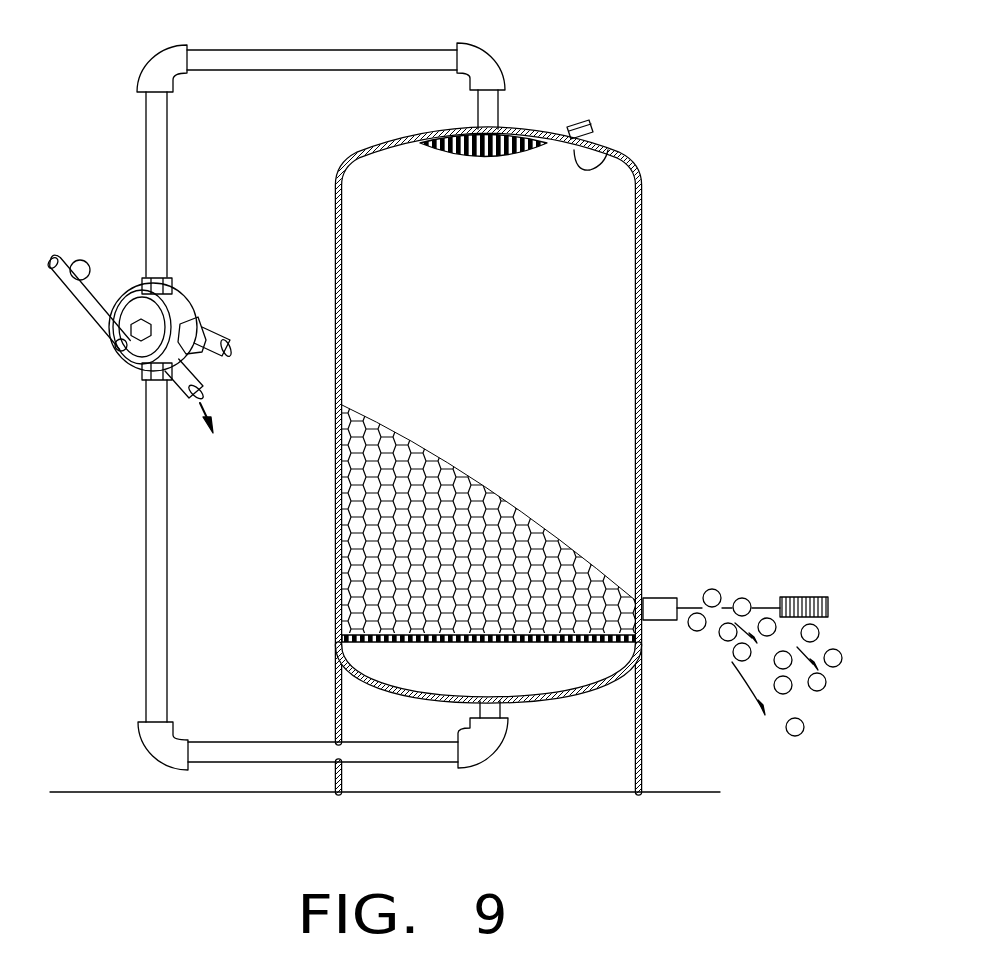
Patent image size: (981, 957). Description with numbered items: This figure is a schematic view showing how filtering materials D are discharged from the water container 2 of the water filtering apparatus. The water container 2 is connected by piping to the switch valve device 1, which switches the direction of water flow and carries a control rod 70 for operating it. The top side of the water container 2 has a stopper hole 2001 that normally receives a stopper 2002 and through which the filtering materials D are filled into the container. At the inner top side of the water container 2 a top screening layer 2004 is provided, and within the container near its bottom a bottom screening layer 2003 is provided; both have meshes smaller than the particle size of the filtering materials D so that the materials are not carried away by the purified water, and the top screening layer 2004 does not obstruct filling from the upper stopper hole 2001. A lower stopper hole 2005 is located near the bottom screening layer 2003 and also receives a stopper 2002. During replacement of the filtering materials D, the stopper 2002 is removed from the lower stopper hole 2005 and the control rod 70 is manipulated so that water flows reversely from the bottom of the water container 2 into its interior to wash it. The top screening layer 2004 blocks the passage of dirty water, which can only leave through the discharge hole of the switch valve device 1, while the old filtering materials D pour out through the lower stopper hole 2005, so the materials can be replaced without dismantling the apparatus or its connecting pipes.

The switch valve device 1 is at (192, 293).
The control rod 70 is at (93, 287).
The water container 2 is at (645, 246).
The stopper hole 2001 is at (603, 170).
The stopper 2002 is at (797, 597).
The bottom screening layer 2003 is at (557, 643).
The top screening layer 2004 is at (517, 130).
The lower stopper hole 2005 is at (645, 597).
The filtering materials D is at (350, 508).